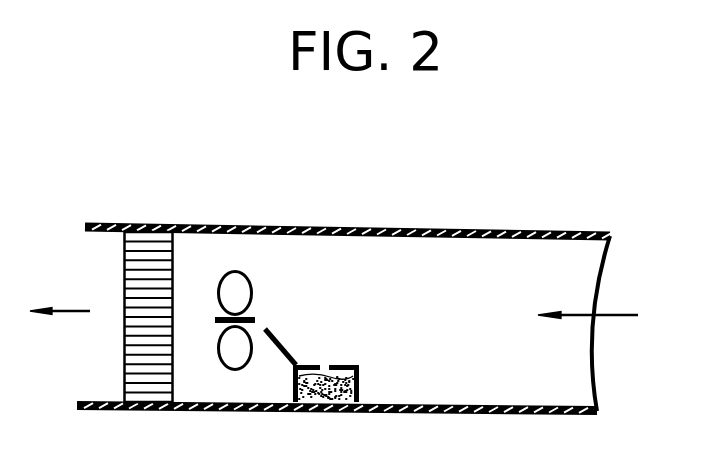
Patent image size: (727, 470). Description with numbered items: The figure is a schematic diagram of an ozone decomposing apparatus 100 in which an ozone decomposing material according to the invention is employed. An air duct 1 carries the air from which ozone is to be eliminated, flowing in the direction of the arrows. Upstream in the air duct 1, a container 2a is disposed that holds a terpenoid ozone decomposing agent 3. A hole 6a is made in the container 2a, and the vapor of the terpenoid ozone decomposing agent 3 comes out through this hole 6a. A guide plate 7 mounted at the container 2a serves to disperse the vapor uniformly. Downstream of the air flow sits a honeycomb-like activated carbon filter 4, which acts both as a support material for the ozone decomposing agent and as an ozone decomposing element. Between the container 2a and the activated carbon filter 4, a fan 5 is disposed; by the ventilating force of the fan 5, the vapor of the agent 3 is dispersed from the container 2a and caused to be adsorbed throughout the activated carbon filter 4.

The ozone decomposing apparatus 100 is at (380, 279).
The air duct 1 is at (394, 226).
The container 2a is at (358, 360).
The terpenoid ozone decomposing agent 3 is at (338, 412).
The honeycomb-like activated carbon filter 4 is at (148, 252).
The fan 5 is at (240, 288).
The hole 6a is at (328, 362).
The guide plate 7 is at (281, 340).